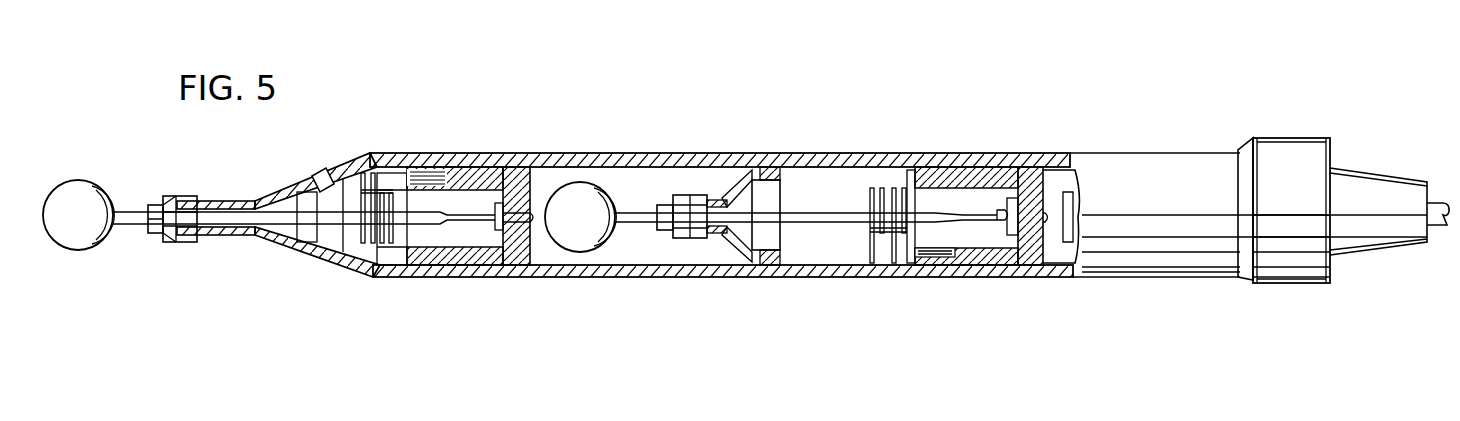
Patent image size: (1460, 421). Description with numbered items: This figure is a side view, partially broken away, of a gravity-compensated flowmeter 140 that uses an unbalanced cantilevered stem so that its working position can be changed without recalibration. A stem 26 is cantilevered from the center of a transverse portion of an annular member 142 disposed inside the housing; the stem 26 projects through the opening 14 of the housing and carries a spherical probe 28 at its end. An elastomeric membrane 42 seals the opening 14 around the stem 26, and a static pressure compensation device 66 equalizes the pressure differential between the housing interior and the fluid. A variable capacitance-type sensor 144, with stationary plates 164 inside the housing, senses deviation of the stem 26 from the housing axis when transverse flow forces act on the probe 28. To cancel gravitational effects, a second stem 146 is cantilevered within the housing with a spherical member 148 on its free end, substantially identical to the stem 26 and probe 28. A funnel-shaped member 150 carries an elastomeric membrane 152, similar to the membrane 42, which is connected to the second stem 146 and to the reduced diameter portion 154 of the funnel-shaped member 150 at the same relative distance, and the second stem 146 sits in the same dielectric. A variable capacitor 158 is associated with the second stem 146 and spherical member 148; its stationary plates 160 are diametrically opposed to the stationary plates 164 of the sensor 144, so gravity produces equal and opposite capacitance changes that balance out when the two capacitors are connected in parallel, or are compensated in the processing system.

The opening 14 is at (160, 240).
The stem 26 is at (121, 212).
The spherical probe 28 is at (76, 192).
The elastomeric membrane 42 is at (157, 200).
The static pressure compensation device 66 is at (316, 170).
The flowmeter 140 is at (736, 286).
The annular member 142 is at (517, 182).
The variable capacitance-type sensor 144 is at (356, 244).
The second stem 146 is at (834, 220).
The spherical member 148 is at (571, 193).
The funnel-shaped member 150 is at (742, 183).
The elastomeric membrane 152 is at (668, 202).
The reduced diameter portion 154 is at (722, 237).
The variable capacitor 158 is at (866, 202).
The stationary plates 160 is at (876, 243).
The stationary plates 164 is at (366, 175).